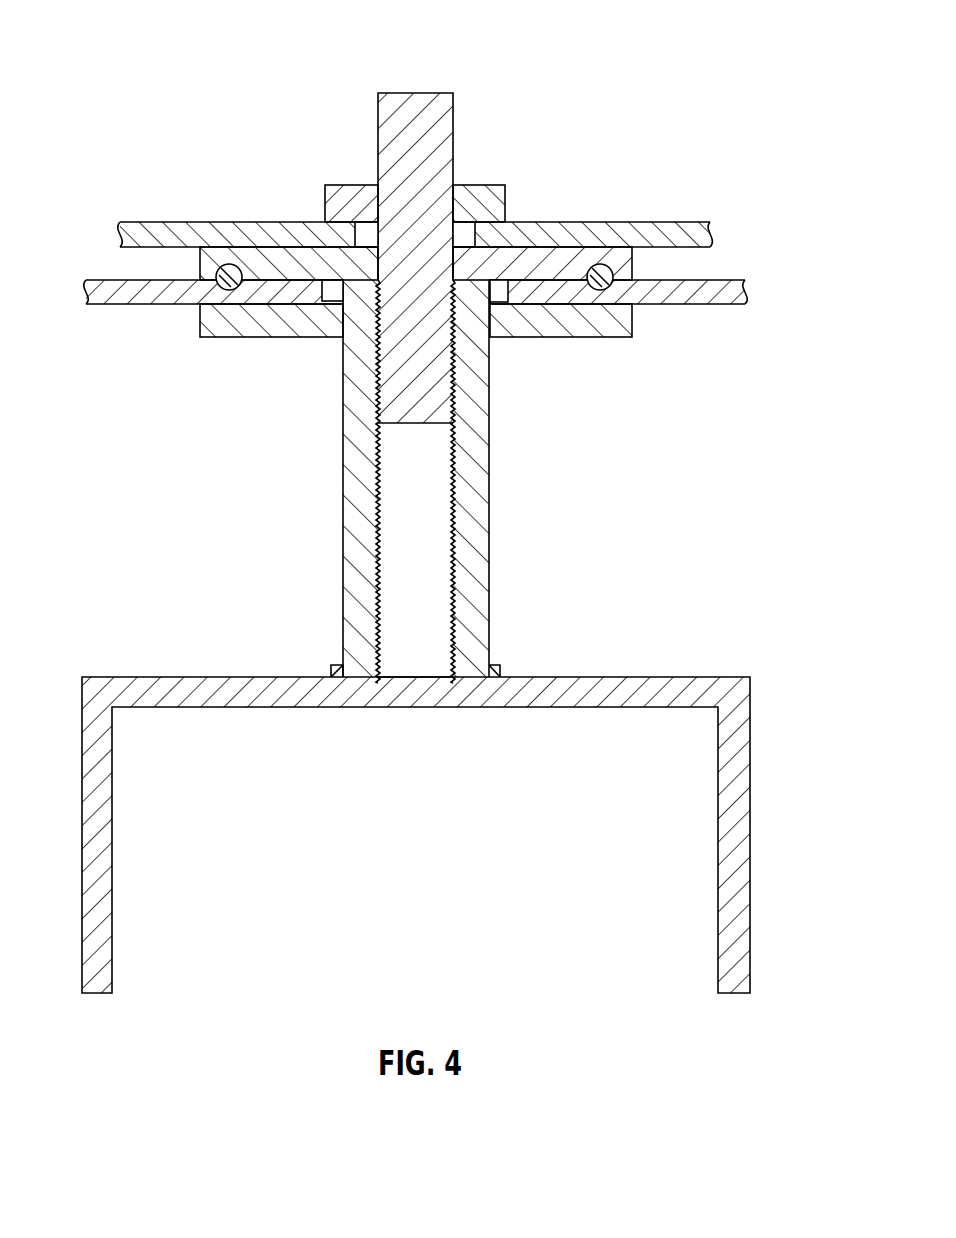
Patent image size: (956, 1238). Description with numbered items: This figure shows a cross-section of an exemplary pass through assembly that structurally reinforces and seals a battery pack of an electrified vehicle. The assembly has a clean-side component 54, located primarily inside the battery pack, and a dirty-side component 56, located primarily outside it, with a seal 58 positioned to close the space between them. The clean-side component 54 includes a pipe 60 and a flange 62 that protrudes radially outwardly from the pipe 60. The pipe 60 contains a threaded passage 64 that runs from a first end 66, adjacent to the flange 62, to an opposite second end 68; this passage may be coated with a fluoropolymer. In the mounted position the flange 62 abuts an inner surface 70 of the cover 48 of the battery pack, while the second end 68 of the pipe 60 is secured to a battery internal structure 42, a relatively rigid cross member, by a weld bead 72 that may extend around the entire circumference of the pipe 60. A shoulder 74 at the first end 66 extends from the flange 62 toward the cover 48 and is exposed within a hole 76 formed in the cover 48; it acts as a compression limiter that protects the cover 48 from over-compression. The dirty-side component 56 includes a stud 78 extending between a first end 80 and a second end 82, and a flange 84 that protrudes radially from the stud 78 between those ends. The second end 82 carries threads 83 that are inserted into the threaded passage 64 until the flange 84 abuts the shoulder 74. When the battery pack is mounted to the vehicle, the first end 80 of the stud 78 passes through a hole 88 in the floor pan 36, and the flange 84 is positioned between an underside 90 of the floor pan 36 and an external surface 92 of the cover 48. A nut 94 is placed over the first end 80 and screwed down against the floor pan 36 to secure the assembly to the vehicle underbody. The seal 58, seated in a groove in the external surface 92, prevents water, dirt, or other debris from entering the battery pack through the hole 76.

The floor pan 36 is at (164, 232).
The battery internal structure 42 is at (752, 786).
The cover 48 is at (690, 297).
The clean-side component 54 is at (500, 432).
The dirty-side component 56 is at (462, 126).
The seal 58 is at (607, 284).
The pipe 60 is at (480, 554).
The flange 62 is at (568, 326).
The threaded passage 64 is at (428, 618).
The first end 66 is at (500, 280).
The second end 68 is at (324, 655).
The inner surface 70 is at (110, 302).
The weld bead 72 is at (500, 672).
The shoulder 74 is at (343, 290).
The hole 76 is at (338, 303).
The stud 78 is at (390, 114).
The first end 80 is at (416, 86).
The second end 82 is at (424, 414).
The threads 83 is at (378, 405).
The flange 84 is at (581, 258).
The hole 88 is at (464, 232).
The underside 90 is at (130, 260).
The external surface 92 is at (137, 282).
The nut 94 is at (340, 185).